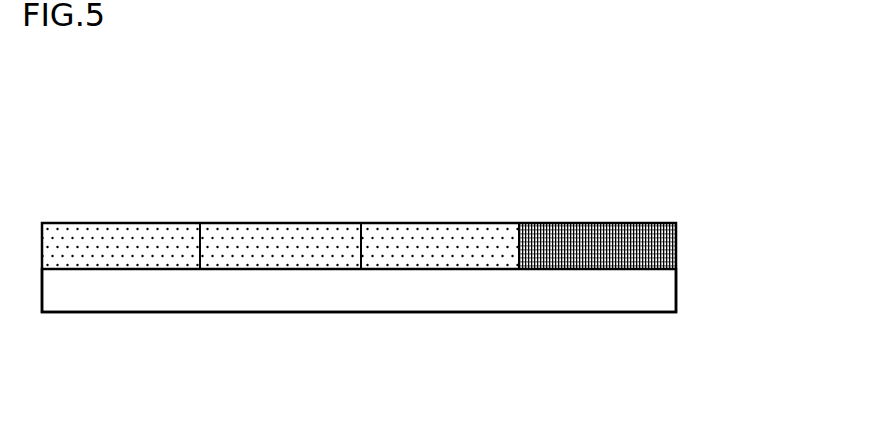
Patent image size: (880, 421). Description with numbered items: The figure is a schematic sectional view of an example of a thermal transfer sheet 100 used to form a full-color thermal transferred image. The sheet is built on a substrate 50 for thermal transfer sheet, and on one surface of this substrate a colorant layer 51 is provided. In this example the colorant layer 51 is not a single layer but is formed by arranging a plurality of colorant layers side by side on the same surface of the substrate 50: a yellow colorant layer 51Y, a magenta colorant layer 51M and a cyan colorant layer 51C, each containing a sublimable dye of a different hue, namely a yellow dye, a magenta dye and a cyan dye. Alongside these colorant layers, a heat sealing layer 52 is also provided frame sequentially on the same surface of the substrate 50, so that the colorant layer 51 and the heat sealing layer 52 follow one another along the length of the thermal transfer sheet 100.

The thermal transfer sheet 100 is at (580, 137).
The substrate for thermal transfer sheet 50 is at (608, 291).
The colorant layer 51 is at (63, 175).
The yellow colorant layer 51Y is at (112, 245).
The magenta colorant layer 51M is at (276, 245).
The cyan colorant layer 51C is at (430, 243).
The heat sealing layer 52 is at (584, 240).